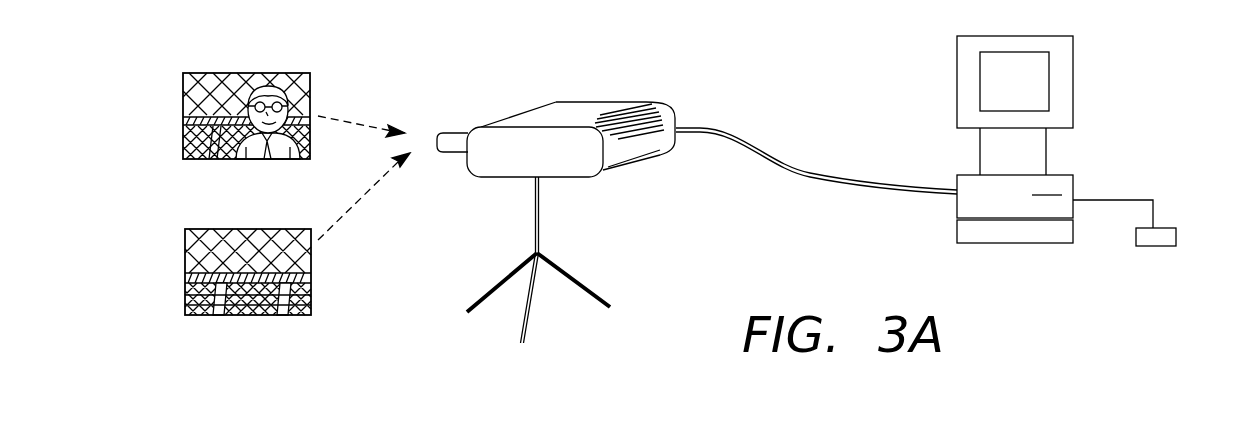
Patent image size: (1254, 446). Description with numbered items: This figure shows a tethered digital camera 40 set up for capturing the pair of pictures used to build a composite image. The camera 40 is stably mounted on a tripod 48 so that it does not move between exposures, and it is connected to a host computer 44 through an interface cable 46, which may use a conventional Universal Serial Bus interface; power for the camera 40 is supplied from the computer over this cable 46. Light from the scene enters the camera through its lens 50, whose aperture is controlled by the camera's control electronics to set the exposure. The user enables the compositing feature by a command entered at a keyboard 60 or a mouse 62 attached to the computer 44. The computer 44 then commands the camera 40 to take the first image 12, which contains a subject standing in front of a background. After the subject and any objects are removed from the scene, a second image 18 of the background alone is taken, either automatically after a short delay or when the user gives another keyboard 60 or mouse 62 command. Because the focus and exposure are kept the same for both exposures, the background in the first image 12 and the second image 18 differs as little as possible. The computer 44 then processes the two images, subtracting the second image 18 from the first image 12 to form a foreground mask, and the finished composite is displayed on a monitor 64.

The first image 12 is at (310, 80).
The second image 18 is at (311, 258).
The tethered digital camera 40 is at (558, 115).
The lens 50 is at (450, 132).
The tripod 48 is at (537, 230).
The interface cable 46 is at (700, 128).
The host computer 44 is at (1050, 182).
The keyboard 60 is at (970, 237).
The monitor 64 is at (1068, 62).
The mouse 62 is at (1165, 232).